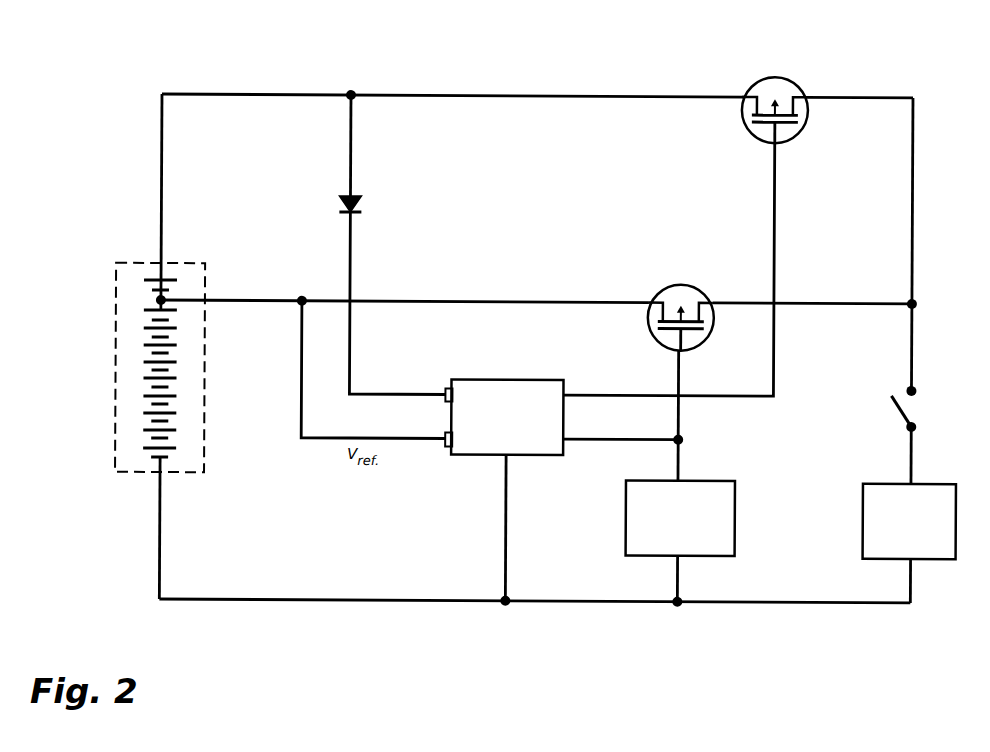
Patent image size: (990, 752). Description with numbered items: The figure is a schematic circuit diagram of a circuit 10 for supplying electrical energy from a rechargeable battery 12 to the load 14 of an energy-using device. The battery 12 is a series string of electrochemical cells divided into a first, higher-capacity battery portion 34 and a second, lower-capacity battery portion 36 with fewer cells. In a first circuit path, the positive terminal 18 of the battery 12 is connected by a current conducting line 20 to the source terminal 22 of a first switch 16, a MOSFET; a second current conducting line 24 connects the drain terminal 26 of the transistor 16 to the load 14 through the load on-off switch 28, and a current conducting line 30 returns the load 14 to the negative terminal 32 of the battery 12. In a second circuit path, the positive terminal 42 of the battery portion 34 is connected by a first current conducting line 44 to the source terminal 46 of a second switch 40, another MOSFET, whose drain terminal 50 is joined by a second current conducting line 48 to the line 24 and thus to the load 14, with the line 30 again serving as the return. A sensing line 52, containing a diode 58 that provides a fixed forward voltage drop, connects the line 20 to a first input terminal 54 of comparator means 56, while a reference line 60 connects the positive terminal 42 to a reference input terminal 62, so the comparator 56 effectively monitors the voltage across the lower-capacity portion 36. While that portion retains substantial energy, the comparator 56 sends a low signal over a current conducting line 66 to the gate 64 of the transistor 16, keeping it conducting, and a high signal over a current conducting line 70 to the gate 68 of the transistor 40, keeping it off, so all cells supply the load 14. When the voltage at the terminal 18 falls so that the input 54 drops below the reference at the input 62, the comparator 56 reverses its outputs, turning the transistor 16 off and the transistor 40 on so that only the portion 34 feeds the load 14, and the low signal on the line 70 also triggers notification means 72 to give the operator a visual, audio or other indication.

The circuit 10 is at (645, 66).
The rechargeable battery 12 is at (117, 264).
The load 14 is at (956, 481).
The first switch 16 is at (770, 101).
The positive terminal 18 is at (162, 263).
The current conducting line 20 is at (468, 94).
The source terminal 22 is at (744, 94).
The second current conducting line 24 is at (913, 172).
The drain terminal 26 is at (796, 94).
The load on-off switch 28 is at (900, 412).
The current conducting line 30 is at (544, 602).
The negative terminal 32 is at (161, 472).
The first battery portion 34 is at (145, 397).
The second battery portion 36 is at (145, 282).
The second switch 40 is at (682, 299).
The positive terminal 42 is at (145, 310).
The first current conducting line 44 is at (446, 300).
The source terminal 46 is at (654, 301).
The second current conducting line 48 is at (820, 300).
The drain terminal 50 is at (710, 301).
The current conducting line 52 is at (351, 250).
The first input terminal 54 is at (446, 386).
The comparator means 56 is at (565, 379).
The diode 58 is at (360, 197).
The current conducting line 60 is at (322, 437).
The reference input terminal 62 is at (446, 447).
The gate 64 is at (786, 121).
The current conducting line 66 is at (775, 342).
The gate 68 is at (693, 328).
The current conducting line 70 is at (680, 415).
The notification means 72 is at (740, 480).